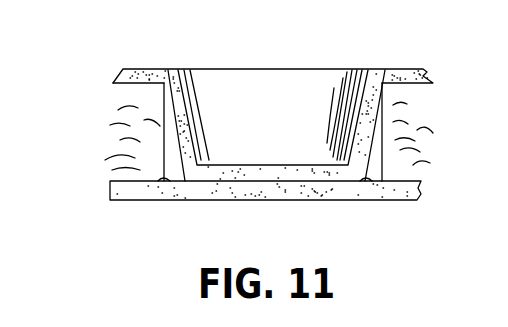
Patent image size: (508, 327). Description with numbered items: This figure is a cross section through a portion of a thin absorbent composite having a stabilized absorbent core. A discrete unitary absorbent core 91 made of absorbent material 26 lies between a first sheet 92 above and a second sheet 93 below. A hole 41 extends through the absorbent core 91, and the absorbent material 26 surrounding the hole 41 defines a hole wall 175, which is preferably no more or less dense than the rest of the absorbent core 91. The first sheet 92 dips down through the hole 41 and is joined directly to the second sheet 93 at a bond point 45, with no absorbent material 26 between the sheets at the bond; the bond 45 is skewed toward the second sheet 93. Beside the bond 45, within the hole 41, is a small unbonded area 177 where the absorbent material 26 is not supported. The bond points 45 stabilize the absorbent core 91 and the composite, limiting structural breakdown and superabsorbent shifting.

The first sheet 92 is at (155, 69).
The absorbent material 26 is at (120, 137).
The absorbent core 91 is at (128, 151).
The hole wall 175 is at (170, 159).
The unbonded area 177 is at (165, 183).
The holes 41 is at (175, 182).
The second sheet 93 is at (200, 200).
The bond points 45 is at (322, 165).